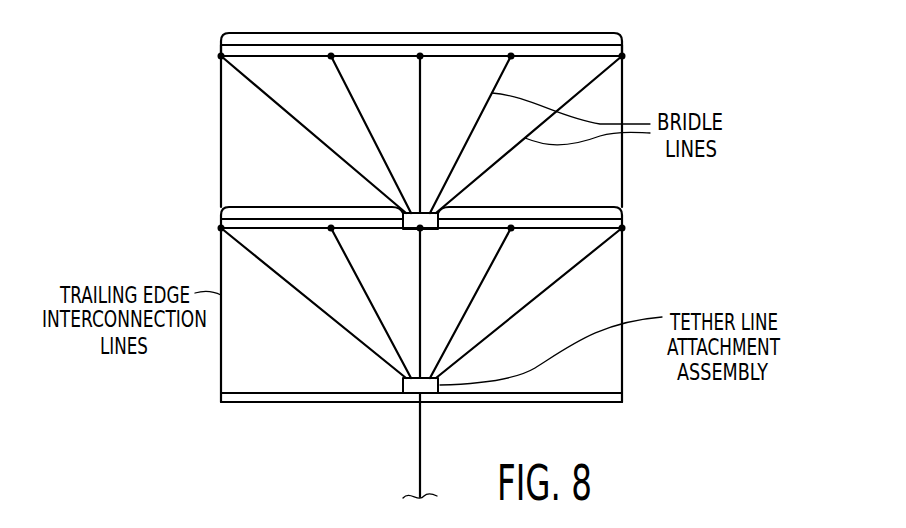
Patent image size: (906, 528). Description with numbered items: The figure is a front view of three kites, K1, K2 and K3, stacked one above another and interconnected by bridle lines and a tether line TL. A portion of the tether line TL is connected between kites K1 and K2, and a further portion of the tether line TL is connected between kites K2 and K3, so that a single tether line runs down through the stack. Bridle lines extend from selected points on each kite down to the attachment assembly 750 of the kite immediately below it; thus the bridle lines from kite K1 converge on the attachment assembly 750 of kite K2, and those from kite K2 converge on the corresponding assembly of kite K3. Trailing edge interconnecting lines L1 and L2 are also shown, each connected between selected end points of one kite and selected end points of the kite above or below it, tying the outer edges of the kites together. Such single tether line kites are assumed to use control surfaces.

The kite K1 is at (256, 38).
The kite K2 is at (583, 205).
The kite K3 is at (250, 393).
The trailing edge interconnecting line L1 is at (622, 261).
The trailing edge interconnecting line L2 is at (221, 95).
The attachment assembly 750 is at (414, 212).
The tether line TL is at (420, 433).